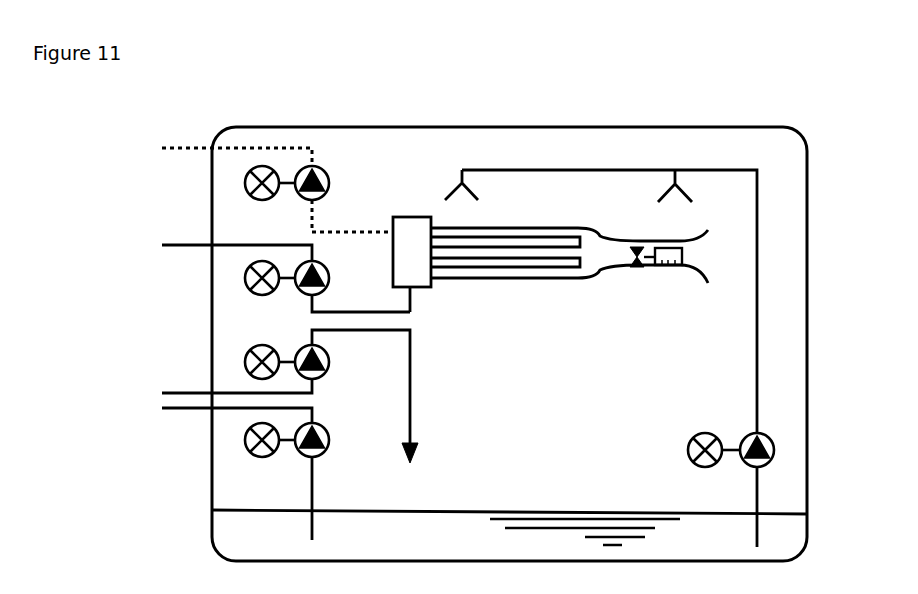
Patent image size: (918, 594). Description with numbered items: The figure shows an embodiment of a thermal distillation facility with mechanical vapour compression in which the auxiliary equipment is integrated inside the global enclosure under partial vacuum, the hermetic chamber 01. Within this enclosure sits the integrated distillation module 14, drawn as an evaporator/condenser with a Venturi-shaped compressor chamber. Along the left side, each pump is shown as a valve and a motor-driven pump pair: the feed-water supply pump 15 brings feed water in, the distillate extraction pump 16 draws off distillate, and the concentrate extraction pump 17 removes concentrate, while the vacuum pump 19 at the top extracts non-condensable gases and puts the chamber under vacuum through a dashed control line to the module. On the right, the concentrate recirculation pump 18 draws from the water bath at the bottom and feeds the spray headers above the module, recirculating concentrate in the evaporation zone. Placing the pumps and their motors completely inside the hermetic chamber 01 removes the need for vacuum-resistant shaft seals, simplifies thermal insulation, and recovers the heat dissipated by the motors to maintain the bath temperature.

The hermetic chamber 01 is at (691, 107).
The integrated distillation module 14 is at (571, 325).
The feed-water supply pump 15 is at (228, 354).
The distillate extraction pump 16 is at (226, 297).
The concentrate extraction pump 17 is at (228, 432).
The concentrate recirculation pump 18 is at (667, 457).
The vacuum pump extracting non-condensable gases 19 is at (226, 199).